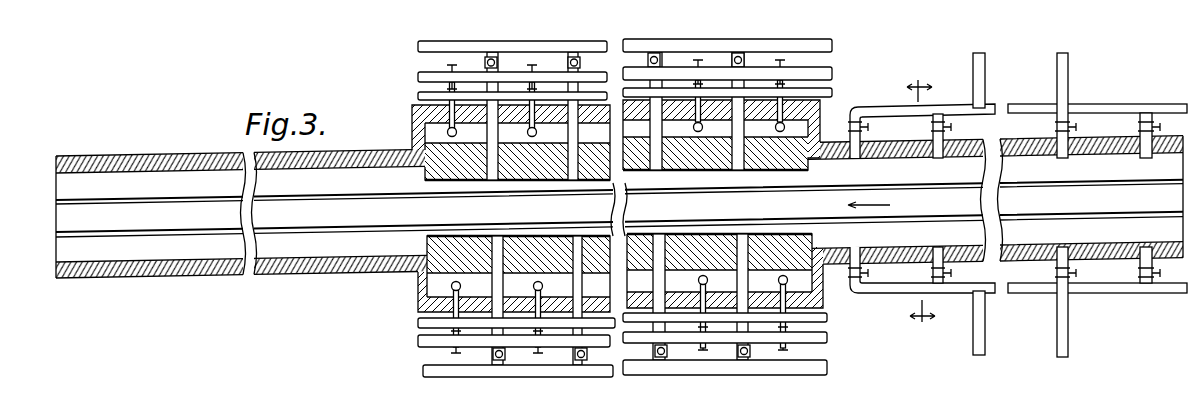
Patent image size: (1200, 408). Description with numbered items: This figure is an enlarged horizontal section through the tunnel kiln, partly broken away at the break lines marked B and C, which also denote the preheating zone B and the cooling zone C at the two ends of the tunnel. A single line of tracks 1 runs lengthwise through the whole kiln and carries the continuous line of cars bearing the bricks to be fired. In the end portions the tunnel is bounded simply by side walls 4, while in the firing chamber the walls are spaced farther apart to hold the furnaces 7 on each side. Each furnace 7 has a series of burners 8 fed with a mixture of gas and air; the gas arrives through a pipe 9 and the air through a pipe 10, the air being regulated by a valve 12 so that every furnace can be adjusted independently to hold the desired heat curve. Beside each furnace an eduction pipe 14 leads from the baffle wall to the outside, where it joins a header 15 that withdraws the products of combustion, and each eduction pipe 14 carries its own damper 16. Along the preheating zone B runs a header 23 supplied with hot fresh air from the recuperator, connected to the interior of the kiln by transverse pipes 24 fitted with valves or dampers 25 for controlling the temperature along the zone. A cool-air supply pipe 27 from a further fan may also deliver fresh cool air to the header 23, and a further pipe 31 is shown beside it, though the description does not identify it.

The line of tracks 1 is at (802, 190).
The furnace 7 is at (617, 206).
The burner 8 is at (457, 133).
The gas supply pipe 9 is at (418, 96).
The air supply pipe 10 is at (418, 77).
The valve 12 is at (450, 66).
The eduction pipe 14 is at (498, 134).
The header 15 is at (418, 47).
The damper 16 is at (497, 63).
The header 23 is at (942, 106).
The transverse pipe 24 is at (1063, 160).
The valve or damper 25 is at (868, 127).
The cool air supply pipe 27 is at (1068, 68).
The pipe 31 is at (985, 66).
The side wall 4 is at (921, 201).
The preheating zone B is at (998, 128).
The cooling zone C is at (247, 277).